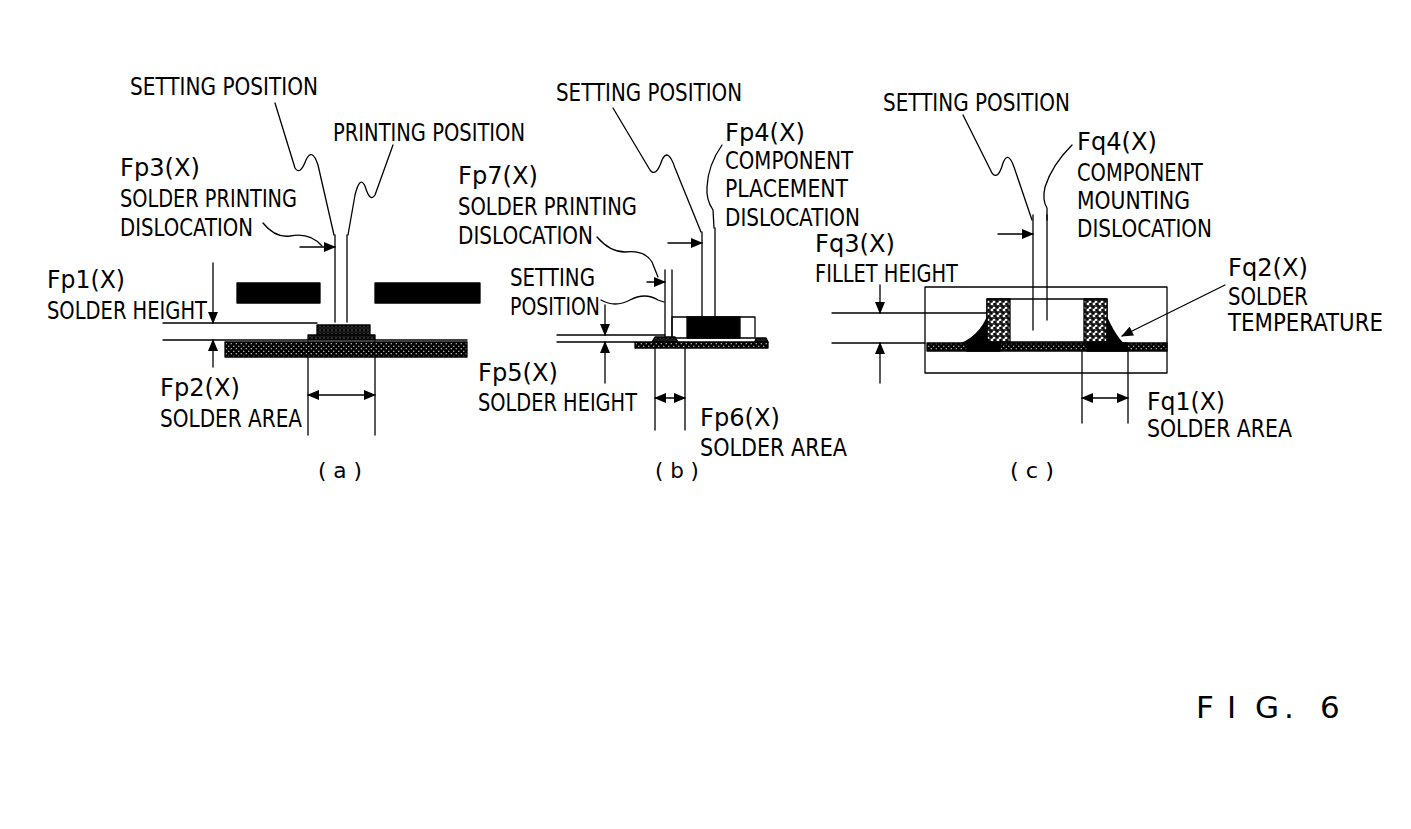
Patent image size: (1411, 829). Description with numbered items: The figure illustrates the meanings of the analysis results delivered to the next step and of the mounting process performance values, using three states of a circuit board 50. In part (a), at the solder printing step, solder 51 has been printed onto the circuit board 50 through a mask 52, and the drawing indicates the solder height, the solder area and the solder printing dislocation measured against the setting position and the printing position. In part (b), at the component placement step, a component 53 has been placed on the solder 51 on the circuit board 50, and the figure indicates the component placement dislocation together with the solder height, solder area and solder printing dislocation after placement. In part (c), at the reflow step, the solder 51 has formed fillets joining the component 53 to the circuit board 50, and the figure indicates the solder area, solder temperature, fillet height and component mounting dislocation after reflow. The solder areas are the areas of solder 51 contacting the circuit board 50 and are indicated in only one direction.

The circuit board 50 is at (450, 340).
The solder 51 is at (371, 326).
The mask 52 is at (378, 283).
The component 53 is at (757, 323).